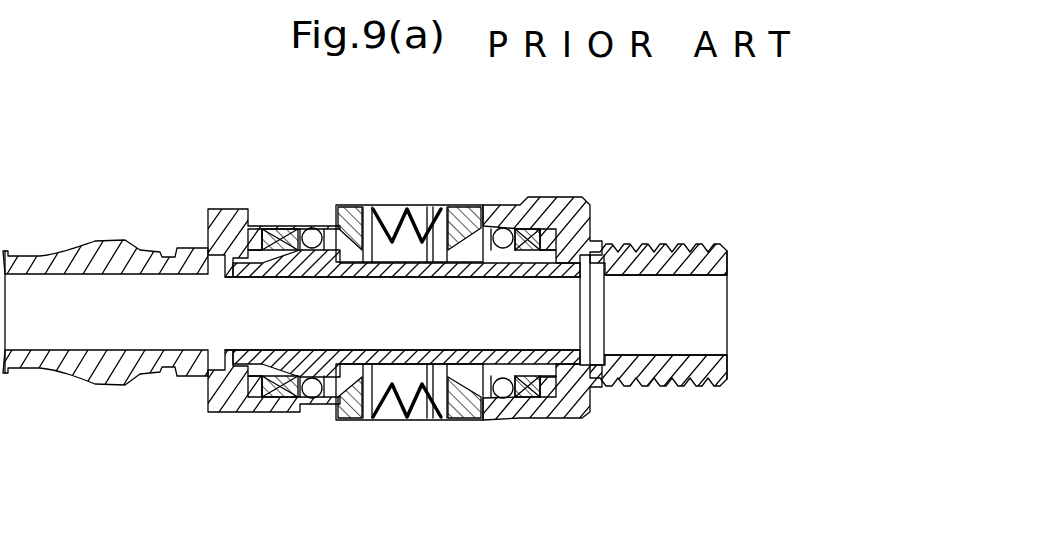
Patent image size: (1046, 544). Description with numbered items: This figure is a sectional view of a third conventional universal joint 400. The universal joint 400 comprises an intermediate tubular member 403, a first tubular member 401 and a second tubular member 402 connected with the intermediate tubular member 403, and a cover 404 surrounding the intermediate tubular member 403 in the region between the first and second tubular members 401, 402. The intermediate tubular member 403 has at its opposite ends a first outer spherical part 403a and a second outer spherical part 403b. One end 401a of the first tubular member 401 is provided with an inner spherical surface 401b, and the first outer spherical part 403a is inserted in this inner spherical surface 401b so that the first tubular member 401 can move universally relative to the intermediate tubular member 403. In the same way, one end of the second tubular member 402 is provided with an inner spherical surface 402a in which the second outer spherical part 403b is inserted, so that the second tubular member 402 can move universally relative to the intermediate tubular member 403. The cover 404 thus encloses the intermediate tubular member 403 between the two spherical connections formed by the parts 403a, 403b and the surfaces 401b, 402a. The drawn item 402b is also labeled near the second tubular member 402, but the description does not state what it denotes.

The universal joint 400 is at (730, 126).
The first tubular member 401 is at (216, 210).
The one end of the first tubular member 401a is at (285, 412).
The inner spherical surface 401b is at (263, 232).
The second tubular member 402 is at (552, 200).
The inner spherical surface of the second tubular member 402a is at (526, 415).
The upper portion of second joint member 402b is at (558, 250).
The intermediate tubular member 403 is at (321, 226).
The first outer spherical part 403a is at (241, 412).
The second outer spherical part 403b is at (556, 372).
The cover 404 is at (418, 205).